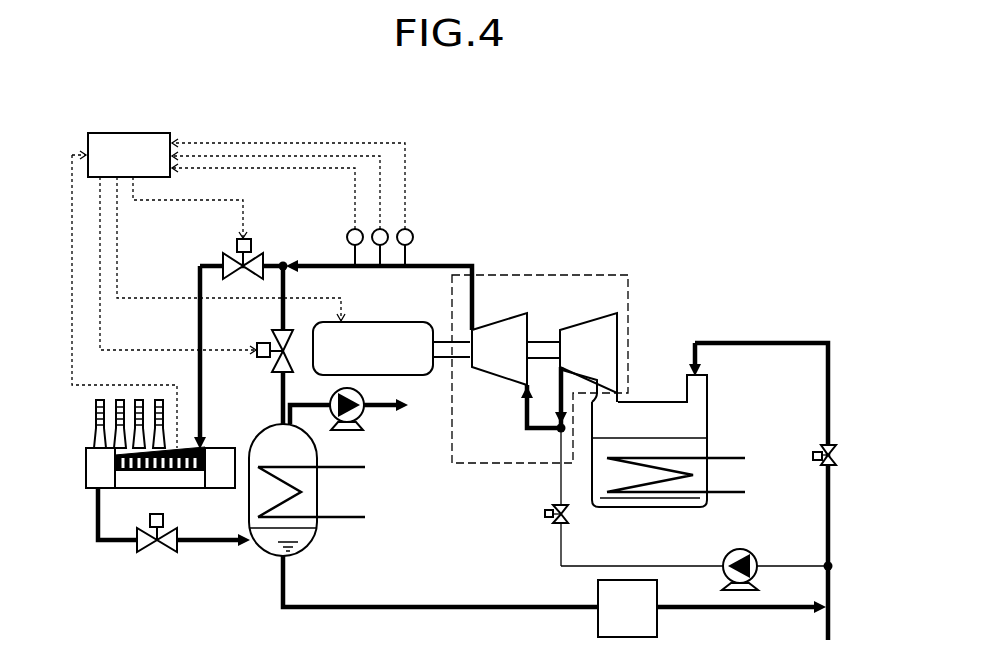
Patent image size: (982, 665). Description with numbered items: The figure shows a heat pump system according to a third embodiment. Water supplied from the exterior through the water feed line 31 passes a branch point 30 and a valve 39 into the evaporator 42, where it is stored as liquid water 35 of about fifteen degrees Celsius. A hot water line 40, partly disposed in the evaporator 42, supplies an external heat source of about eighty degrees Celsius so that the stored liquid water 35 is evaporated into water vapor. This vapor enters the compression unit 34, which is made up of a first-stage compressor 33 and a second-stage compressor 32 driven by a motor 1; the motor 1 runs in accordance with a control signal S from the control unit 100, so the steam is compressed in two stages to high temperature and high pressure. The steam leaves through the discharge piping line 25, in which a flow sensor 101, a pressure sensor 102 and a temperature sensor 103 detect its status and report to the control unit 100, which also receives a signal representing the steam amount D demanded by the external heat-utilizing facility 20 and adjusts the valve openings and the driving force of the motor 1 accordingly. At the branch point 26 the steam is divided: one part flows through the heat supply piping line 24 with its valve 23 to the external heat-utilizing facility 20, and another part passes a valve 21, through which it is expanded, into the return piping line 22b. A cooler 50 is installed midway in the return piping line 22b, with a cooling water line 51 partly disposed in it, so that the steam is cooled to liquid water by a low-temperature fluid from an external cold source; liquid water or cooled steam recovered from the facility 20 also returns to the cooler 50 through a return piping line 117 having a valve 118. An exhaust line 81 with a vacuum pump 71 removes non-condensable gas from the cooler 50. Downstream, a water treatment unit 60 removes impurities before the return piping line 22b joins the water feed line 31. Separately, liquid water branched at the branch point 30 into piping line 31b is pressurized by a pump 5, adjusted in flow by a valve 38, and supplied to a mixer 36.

The motor 1 is at (387, 320).
The pump 5 is at (740, 549).
The external heat-utilizing facility 20 is at (85, 470).
The valve 21 is at (270, 338).
The return piping line 22b is at (410, 606).
The valve 23 is at (237, 245).
The heat supply piping line 24 is at (198, 333).
The discharge piping line 25 is at (455, 263).
The branch point 26 is at (283, 261).
The branch point 30 is at (832, 566).
The water feed line 31 is at (832, 599).
The piping line 31b is at (635, 565).
The second-stage compressor 32 is at (500, 326).
The first-stage compressor 33 is at (586, 325).
The compression unit 34 is at (540, 349).
The liquid water 35 is at (682, 500).
The mixer 36 is at (558, 432).
The valve 38 is at (545, 514).
The valve 39 is at (838, 455).
The hot water line 40 is at (737, 458).
The evaporator 42 is at (709, 419).
The cooler 50 is at (318, 524).
The cooling water line 51 is at (342, 517).
The water treatment unit 60 is at (658, 625).
The vacuum pump 71 is at (348, 431).
The exhaust line 81 is at (383, 410).
The control unit 100 is at (130, 132).
The flow sensor 101 is at (350, 232).
The pressure sensor 102 is at (386, 231).
The temperature sensor 103 is at (412, 232).
The return piping line 117 is at (210, 543).
The valve 118 is at (147, 553).
The steam amount D is at (71, 292).
The control signal S is at (120, 253).